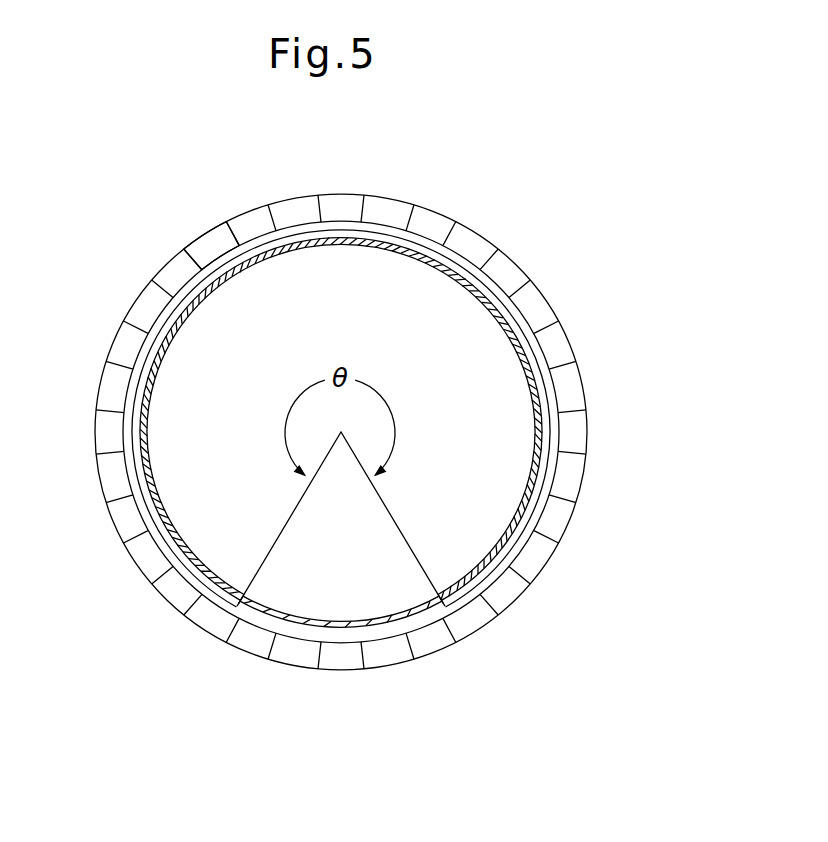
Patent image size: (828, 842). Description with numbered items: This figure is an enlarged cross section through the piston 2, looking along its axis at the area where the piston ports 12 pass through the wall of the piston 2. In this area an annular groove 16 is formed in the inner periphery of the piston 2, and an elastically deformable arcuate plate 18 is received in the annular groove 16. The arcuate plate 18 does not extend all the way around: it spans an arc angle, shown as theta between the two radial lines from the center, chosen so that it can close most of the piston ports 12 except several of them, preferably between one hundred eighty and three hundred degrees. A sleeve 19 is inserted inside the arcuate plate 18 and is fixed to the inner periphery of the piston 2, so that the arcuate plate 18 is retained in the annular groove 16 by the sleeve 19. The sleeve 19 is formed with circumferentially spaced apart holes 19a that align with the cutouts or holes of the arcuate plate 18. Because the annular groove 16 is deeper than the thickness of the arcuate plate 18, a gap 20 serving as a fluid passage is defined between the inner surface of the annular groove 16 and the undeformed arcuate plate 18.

The piston 2 is at (468, 224).
The piston ports 12 is at (262, 206).
The annular groove 16 is at (160, 282).
The arcuate plate 18 is at (510, 280).
The sleeve 19 is at (525, 393).
The holes 19a is at (487, 285).
The gap 20 is at (205, 238).